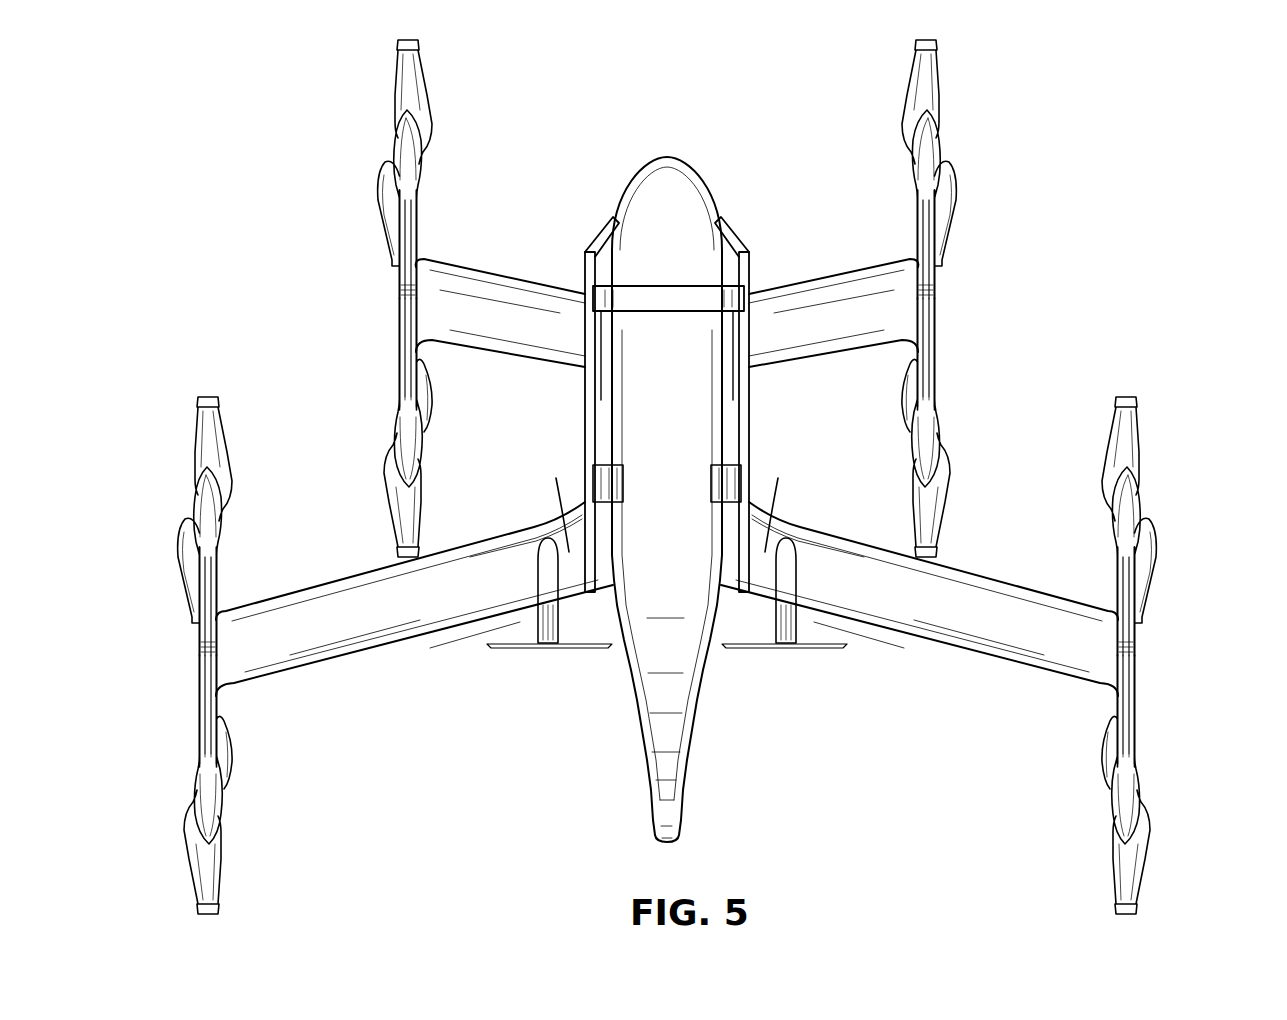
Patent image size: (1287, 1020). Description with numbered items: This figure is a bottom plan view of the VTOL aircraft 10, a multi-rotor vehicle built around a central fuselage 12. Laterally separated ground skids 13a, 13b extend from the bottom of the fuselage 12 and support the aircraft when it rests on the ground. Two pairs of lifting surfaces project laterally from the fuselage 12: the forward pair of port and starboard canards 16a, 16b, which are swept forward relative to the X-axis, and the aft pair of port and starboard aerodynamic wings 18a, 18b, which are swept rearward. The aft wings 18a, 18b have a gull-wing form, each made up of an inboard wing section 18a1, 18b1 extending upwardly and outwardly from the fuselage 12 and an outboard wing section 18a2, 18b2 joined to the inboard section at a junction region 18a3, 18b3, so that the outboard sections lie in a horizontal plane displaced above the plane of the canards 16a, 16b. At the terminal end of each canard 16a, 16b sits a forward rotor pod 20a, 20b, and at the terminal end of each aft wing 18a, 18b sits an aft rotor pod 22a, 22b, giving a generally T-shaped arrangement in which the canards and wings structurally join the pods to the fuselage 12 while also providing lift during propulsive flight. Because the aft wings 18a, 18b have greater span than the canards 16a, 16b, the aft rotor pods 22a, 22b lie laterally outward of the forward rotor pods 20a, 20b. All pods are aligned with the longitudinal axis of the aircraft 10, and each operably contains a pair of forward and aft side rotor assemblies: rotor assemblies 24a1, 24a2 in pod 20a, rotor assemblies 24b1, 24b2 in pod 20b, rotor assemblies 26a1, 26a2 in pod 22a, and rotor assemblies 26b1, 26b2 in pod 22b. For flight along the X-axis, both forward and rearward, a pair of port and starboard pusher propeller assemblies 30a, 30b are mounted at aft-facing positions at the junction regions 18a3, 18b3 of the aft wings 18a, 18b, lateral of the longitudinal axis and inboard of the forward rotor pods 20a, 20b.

The VTOL aircraft 10 is at (577, 82).
The fuselage 12 is at (682, 381).
The ground skid 13a is at (752, 248).
The ground skid 13b is at (750, 428).
The port canard 16a is at (834, 330).
The starboard canard 16b is at (534, 336).
The port aerodynamic wing 18a is at (919, 605).
The starboard aerodynamic wing 18b is at (414, 599).
The inboard wing section 18a1 is at (776, 500).
The inboard wing section 18b1 is at (548, 499).
The outboard wing section 18a2 is at (1035, 650).
The outboard wing section 18b2 is at (302, 650).
The junction region 18a3 is at (806, 522).
The junction region 18b3 is at (540, 522).
The port forward rotor pod 20a is at (931, 327).
The starboard forward rotor pod 20b is at (404, 332).
The port aft rotor pod 22a is at (1128, 680).
The starboard aft rotor pod 22b is at (205, 683).
The forward side rotor assembly 24a1 is at (948, 160).
The aft side rotor assembly 24a2 is at (946, 450).
The forward side rotor assembly 24b1 is at (392, 156).
The aft side rotor assembly 24b2 is at (390, 452).
The forward side rotor assembly 26a1 is at (1146, 508).
The aft side rotor assembly 26a2 is at (1146, 814).
The forward side rotor assembly 26b1 is at (192, 510).
The aft side rotor assembly 26b2 is at (226, 818).
The port pusher propeller assembly 30a is at (783, 625).
The starboard pusher propeller assembly 30b is at (548, 625).